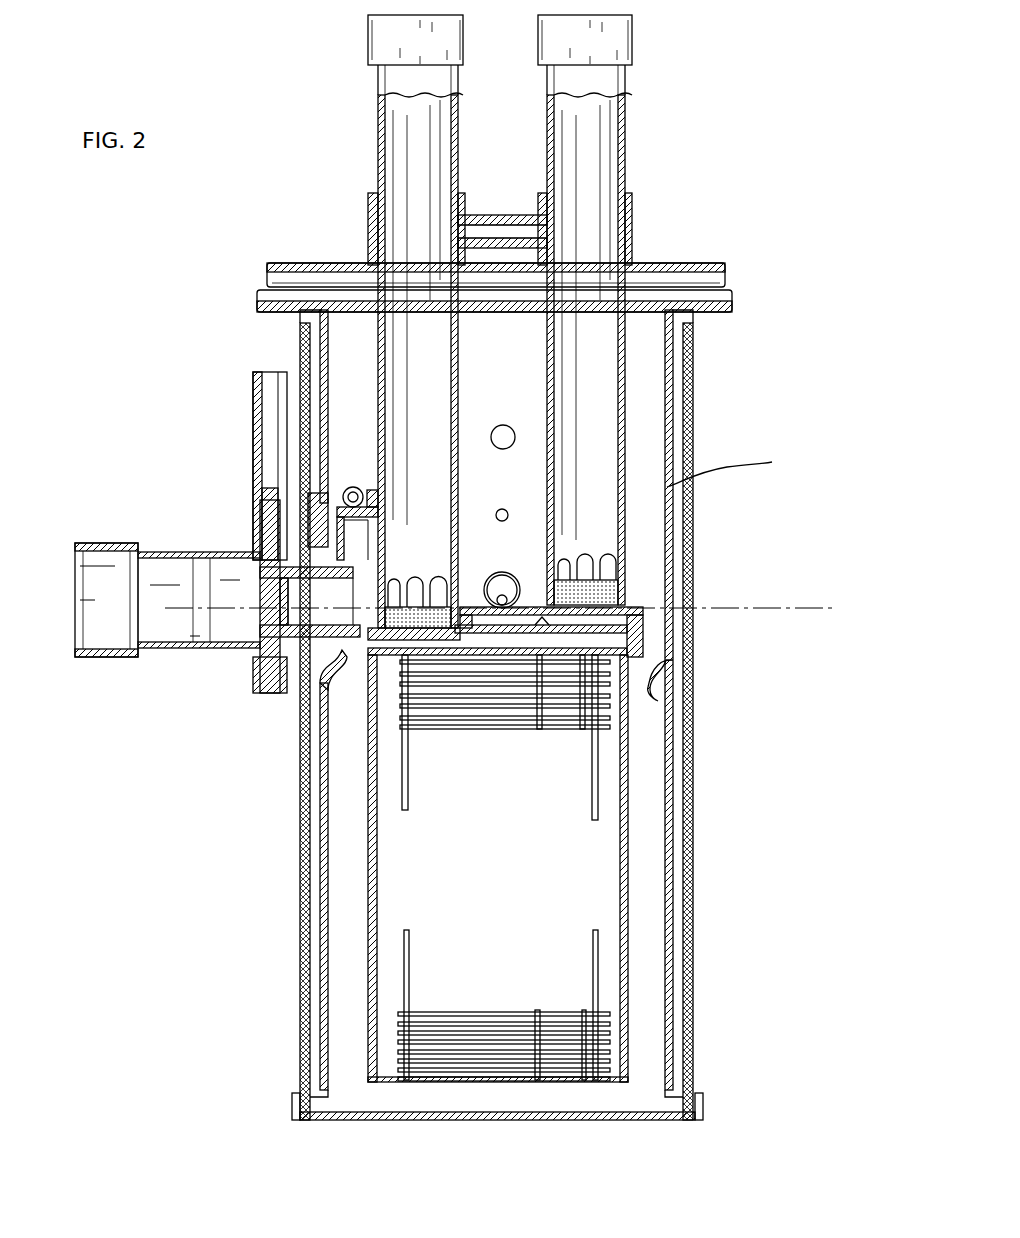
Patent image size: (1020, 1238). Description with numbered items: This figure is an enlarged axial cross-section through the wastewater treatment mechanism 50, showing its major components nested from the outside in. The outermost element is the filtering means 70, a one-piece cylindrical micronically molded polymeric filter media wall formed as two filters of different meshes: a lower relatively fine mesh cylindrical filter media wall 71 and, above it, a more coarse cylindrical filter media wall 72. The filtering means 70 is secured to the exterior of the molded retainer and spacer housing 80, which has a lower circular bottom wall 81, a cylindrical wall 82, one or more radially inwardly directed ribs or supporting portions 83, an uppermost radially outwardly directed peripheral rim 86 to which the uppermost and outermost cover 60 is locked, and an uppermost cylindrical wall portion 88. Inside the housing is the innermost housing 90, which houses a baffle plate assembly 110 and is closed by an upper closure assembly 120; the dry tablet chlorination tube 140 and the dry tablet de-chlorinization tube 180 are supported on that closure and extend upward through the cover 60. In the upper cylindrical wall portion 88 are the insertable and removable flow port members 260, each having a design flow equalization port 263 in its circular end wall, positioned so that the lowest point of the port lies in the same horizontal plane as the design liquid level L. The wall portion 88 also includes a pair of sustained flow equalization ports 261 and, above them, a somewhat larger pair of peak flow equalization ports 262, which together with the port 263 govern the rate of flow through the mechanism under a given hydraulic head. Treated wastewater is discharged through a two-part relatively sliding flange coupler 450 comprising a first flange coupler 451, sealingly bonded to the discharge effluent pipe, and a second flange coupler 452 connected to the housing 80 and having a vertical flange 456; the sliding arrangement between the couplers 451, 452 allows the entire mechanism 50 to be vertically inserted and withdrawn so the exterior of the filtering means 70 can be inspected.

The wastewater treatment mechanism 50 is at (740, 553).
The uppermost and outermost closure or cover 60 is at (693, 265).
The filtering means 70 is at (516, 736).
The lower relatively fine mesh cylindrical filter media wall 71 is at (503, 736).
The more coarse cylindrical filter media wall 72 is at (695, 383).
The retainer and spacer housing 80 is at (504, 736).
The lower circular bottom wall 81 is at (480, 1115).
The cylindrical wall 82 is at (326, 870).
The radially inwardly directed cylindrical rib or supporting portion 83 is at (340, 670).
The uppermost radially outwardly directed peripheral rim 86 is at (713, 317).
The uppermost cylindrical wall portion 88 is at (733, 467).
The innermost housing 90 is at (618, 865).
The baffle plate assembly 110 is at (472, 727).
The upper closure assembly 120 is at (657, 624).
The dry tablet chlorination tube 140 is at (627, 130).
The dry tablet de-chlorinization tube 180 is at (378, 105).
The flow port member 260 is at (496, 578).
The sustained flow equalization port 261 is at (500, 508).
The peak flow equalization port 262 is at (501, 423).
The design flow equalization port 263 is at (506, 598).
The two-part relatively sliding flange coupler 450 is at (185, 568).
The first flange coupler 451 is at (183, 658).
The second flange coupler 452 is at (260, 574).
The vertical flange 456 is at (260, 490).
The liquid level L is at (748, 608).